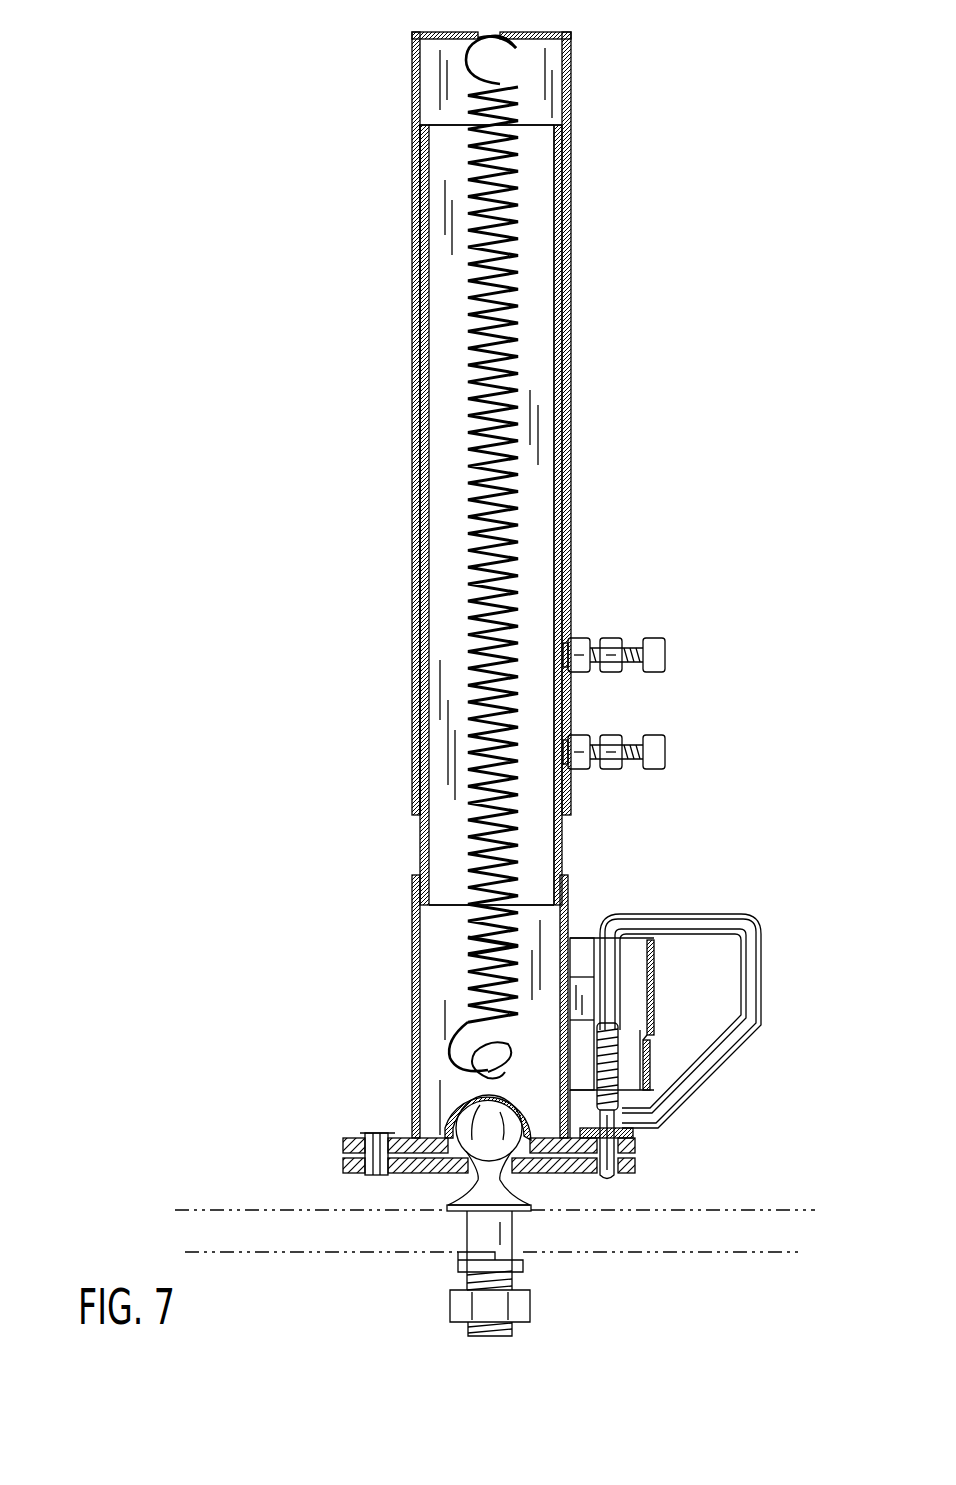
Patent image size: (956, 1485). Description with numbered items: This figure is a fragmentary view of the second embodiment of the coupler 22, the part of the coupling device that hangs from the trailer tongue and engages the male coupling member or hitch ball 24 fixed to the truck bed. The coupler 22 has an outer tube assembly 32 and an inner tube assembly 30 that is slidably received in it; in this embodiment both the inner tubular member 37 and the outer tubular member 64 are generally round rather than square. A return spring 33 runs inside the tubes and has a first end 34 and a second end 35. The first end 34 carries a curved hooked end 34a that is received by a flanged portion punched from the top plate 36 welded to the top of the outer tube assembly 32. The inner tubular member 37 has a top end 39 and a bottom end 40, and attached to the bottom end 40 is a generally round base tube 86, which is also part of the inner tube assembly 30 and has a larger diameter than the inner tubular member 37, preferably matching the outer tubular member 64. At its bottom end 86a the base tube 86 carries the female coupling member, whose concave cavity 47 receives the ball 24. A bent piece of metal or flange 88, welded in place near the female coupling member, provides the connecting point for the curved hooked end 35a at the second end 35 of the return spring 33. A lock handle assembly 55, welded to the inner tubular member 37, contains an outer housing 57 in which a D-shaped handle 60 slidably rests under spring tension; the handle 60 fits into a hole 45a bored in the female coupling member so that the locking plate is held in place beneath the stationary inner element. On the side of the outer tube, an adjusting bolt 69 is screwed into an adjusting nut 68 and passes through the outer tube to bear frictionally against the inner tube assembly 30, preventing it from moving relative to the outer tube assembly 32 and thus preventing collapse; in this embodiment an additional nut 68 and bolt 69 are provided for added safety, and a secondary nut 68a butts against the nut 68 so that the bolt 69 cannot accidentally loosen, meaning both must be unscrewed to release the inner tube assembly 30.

The coupler 22 is at (672, 367).
The hitch ball 24 is at (530, 1160).
The inner tube assembly 30 is at (412, 848).
The outer tube assembly 32 is at (490, 36).
The return spring 33 is at (515, 178).
The first end 34 is at (470, 97).
The curved hooked end 34a is at (520, 50).
The second end 35 is at (468, 940).
The curved hooked end 35a is at (455, 1032).
The top plate 36 is at (548, 36).
The inner tubular member 37 is at (565, 848).
The top end 39 is at (530, 122).
The bottom end 40 is at (440, 912).
The hole 45a is at (618, 1182).
The concave cavity 47 is at (440, 1130).
The lock handle assembly 55 is at (760, 926).
The outer housing 57 is at (583, 938).
The D-shaped handle 60 is at (752, 992).
The outer tubular member 64 is at (415, 130).
The adjusting nut 68 is at (578, 638).
The secondary nut 68a is at (618, 638).
The adjusting bolt 69 is at (665, 655).
The base tube 86 is at (412, 980).
The bottom end 86a is at (415, 1126).
The flange 88 is at (475, 1072).